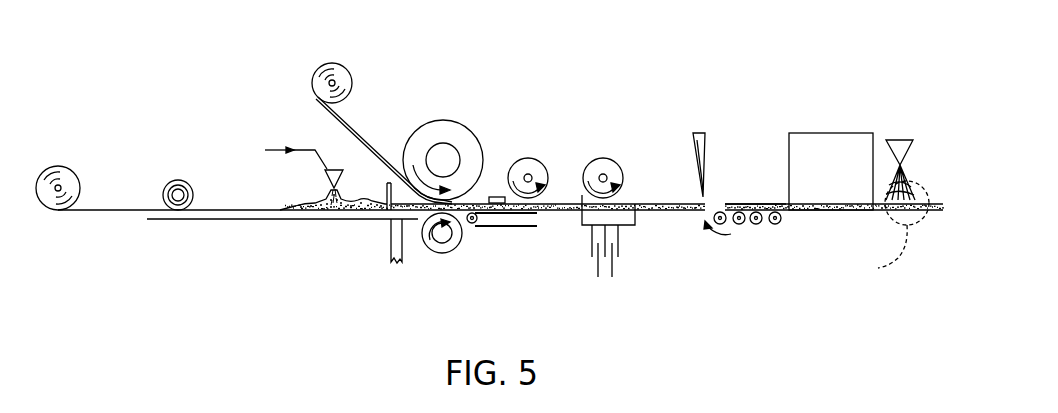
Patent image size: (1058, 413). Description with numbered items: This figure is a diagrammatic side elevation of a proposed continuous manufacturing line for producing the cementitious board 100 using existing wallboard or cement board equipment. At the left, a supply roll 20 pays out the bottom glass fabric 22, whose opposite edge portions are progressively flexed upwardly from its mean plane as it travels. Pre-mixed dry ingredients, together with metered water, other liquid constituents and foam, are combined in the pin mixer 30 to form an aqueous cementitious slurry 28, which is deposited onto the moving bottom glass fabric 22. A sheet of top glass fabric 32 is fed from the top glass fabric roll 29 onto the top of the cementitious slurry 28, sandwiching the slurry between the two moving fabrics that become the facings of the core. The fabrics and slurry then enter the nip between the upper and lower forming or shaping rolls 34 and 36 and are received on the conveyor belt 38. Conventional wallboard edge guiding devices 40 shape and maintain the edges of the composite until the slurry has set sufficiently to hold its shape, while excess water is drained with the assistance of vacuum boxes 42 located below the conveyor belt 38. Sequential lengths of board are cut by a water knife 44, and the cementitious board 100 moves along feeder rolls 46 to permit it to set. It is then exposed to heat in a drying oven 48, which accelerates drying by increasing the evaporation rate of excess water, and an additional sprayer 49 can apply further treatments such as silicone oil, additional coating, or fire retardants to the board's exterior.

The supply roll 20 is at (70, 167).
The bottom glass fabric 22 is at (88, 212).
The cementitious slurry 28 is at (303, 202).
The top glass fabric roll 29 is at (352, 73).
The pin mixer 30 is at (305, 150).
The top glass fabric 32 is at (347, 123).
The upper forming roll 34 is at (447, 127).
The lower forming roll 36 is at (447, 254).
The conveyor belt 38 is at (498, 228).
The wallboard edge guiding devices 40 is at (497, 197).
The vacuum boxes 42 is at (623, 217).
The water knife 44 is at (695, 133).
The feeder rolls 46 is at (745, 235).
The drying oven 48 is at (846, 179).
The sprayer 49 is at (898, 140).
The cementitious board 100 is at (740, 201).